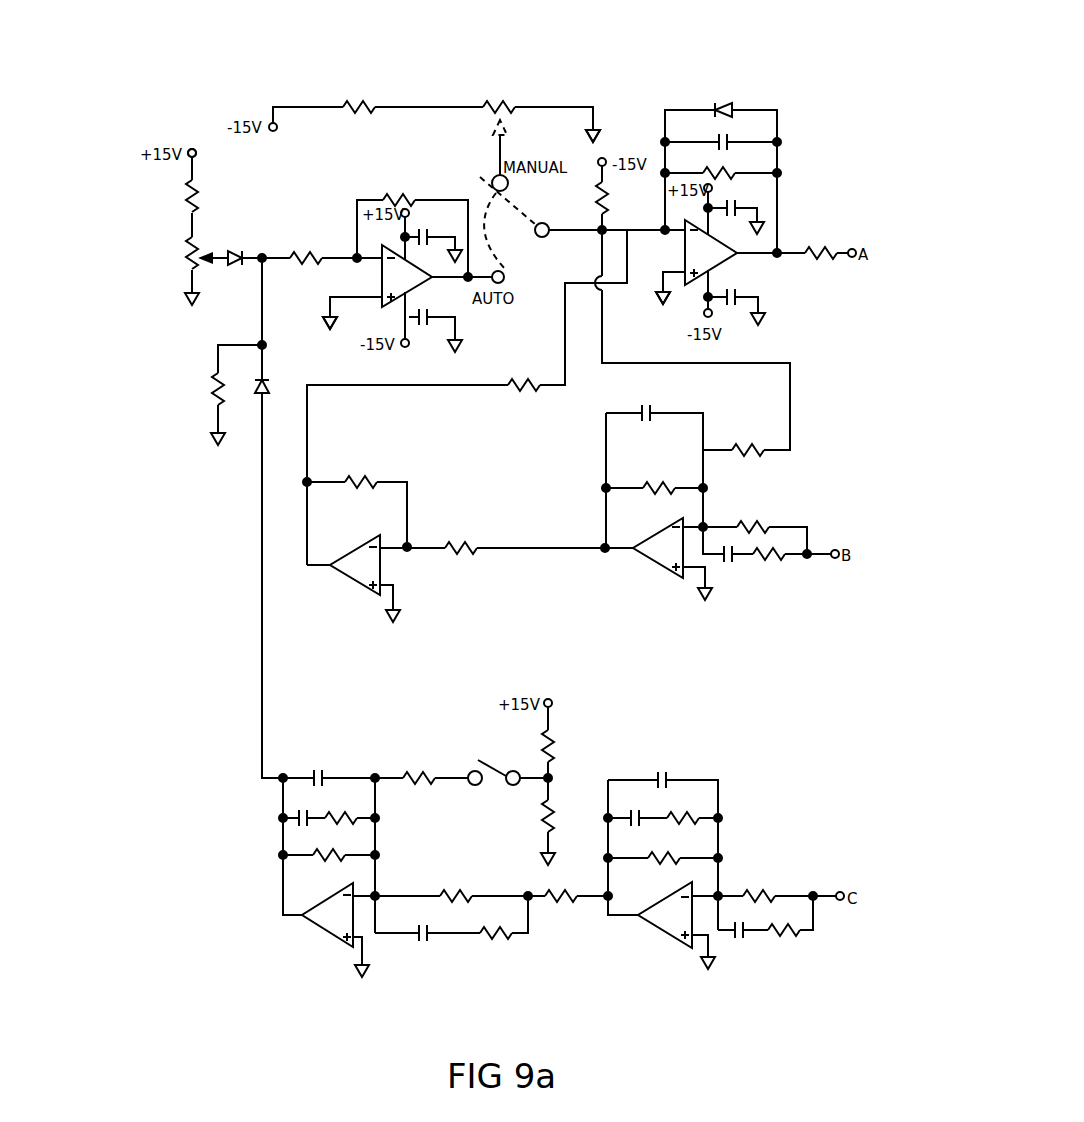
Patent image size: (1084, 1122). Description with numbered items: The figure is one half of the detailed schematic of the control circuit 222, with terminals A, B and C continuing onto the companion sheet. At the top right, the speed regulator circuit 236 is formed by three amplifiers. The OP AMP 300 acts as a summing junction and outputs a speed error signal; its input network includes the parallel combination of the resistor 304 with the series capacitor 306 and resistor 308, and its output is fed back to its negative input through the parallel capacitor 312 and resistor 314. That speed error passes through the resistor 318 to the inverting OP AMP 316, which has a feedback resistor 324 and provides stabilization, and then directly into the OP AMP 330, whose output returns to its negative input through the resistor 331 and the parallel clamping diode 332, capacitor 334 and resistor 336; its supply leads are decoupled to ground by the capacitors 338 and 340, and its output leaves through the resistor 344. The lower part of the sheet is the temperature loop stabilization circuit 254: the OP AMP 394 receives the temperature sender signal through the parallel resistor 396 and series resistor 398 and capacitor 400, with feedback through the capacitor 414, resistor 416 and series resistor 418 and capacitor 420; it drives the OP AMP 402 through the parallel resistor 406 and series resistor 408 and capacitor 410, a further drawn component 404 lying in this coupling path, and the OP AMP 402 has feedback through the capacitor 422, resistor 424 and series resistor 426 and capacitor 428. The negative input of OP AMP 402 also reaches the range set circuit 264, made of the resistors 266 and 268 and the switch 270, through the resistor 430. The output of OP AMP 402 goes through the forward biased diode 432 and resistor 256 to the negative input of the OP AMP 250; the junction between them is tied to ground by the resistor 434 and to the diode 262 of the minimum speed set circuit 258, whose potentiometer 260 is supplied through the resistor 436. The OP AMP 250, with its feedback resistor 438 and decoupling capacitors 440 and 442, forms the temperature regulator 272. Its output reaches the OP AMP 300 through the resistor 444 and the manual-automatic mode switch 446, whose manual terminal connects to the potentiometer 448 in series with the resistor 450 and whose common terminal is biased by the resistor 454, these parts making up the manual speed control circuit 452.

The control circuit 222 is at (615, 82).
The speed regulator circuit 236 is at (678, 298).
The OP AMP 250 is at (381, 277).
The temperature loop stabilization circuit 254 is at (748, 769).
The resistor 256 is at (314, 254).
The minimum speed set circuit 258 is at (207, 130).
The potentiometer 260 is at (206, 256).
The forward biased diode 262 is at (237, 266).
The range set circuit 264 is at (467, 748).
The resistor 266 is at (557, 748).
The resistor 268 is at (538, 821).
The switch 270 is at (494, 786).
The temperature regulator 272 is at (357, 314).
The OP AMP 300 is at (669, 533).
The resistor 304 is at (753, 525).
The capacitor 306 is at (732, 567).
The resistor 308 is at (780, 568).
The capacitor 312 is at (650, 410).
The resistor 314 is at (655, 486).
The OP AMP 316 is at (358, 555).
The resistor 318 is at (462, 542).
The resistor 324 is at (360, 480).
The OP AMP 330 is at (730, 257).
The resistor 331 is at (520, 396).
The clamping diode 332 is at (723, 102).
The capacitor 334 is at (720, 136).
The resistor 336 is at (710, 171).
The decoupling capacitor 338 is at (735, 191).
The decoupling capacitor 340 is at (732, 304).
The resistor 344 is at (807, 250).
The OP AMP 394 is at (664, 924).
The resistor 396 is at (765, 893).
The resistor 398 is at (778, 939).
The capacitor 400 is at (735, 944).
The OP AMP 402 is at (328, 923).
The resistor 404 is at (575, 862).
The resistor 406 is at (458, 888).
The resistor 408 is at (498, 942).
The capacitor 410 is at (421, 940).
The capacitor 414 is at (660, 772).
The resistor 416 is at (672, 854).
The resistor 418 is at (690, 814).
The capacitor 420 is at (637, 810).
The capacitor 422 is at (320, 766).
The resistor 424 is at (340, 858).
The resistor 426 is at (357, 812).
The capacitor 428 is at (300, 810).
The resistor 430 is at (418, 772).
The diode 432 is at (272, 388).
The resistor 434 is at (216, 380).
The resistor 436 is at (198, 182).
The resistor 438 is at (401, 195).
The decoupling capacitor 440 is at (437, 224).
The decoupling capacitor 442 is at (428, 333).
The resistor 444 is at (743, 450).
The manual-automatic mode switch 446 is at (538, 236).
The potentiometer 448 is at (502, 105).
The resistor 450 is at (368, 105).
The manual speed control circuit 452 is at (462, 179).
The biasing resistor 454 is at (607, 188).